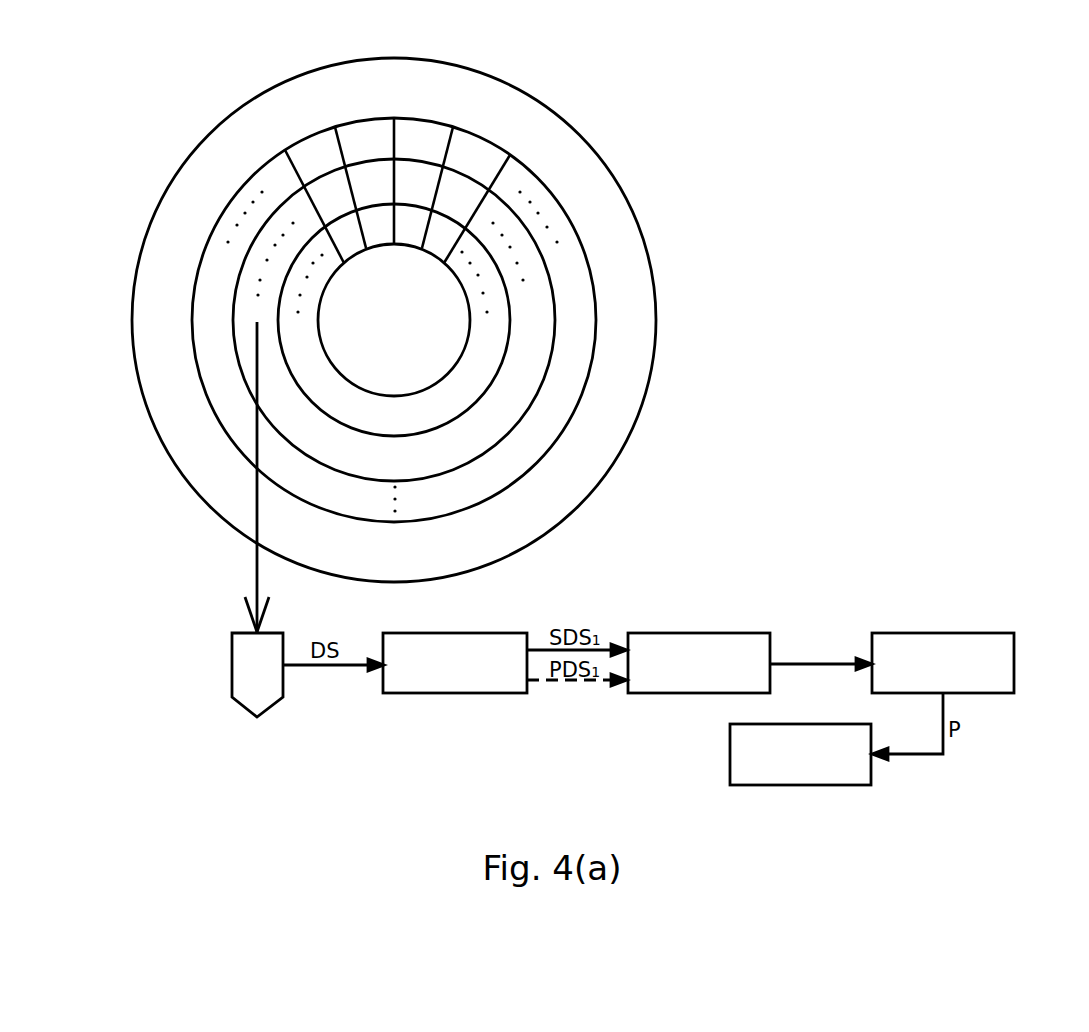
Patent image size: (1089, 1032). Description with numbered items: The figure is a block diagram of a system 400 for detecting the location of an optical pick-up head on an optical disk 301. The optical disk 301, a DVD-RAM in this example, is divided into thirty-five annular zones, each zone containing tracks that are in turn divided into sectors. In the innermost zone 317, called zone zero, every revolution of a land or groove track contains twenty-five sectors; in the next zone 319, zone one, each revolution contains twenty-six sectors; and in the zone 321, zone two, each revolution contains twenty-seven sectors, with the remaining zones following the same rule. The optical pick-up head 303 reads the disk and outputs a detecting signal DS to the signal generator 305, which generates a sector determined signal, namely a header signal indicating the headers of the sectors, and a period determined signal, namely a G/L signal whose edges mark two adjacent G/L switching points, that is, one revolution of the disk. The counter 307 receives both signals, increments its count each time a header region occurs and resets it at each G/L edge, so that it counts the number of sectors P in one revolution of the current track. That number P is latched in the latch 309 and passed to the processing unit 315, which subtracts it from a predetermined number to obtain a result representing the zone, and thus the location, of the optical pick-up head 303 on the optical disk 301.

The system 400 is at (598, 320).
The optical disk 301 is at (437, 320).
The zone 321 is at (582, 283).
The zone 319 is at (538, 348).
The innermost zone 317 is at (485, 372).
The optical pick-up head 303 is at (232, 672).
The signal generator 305 is at (503, 633).
The counter 307 is at (663, 633).
The latch 309 is at (945, 633).
The processing unit 315 is at (800, 785).